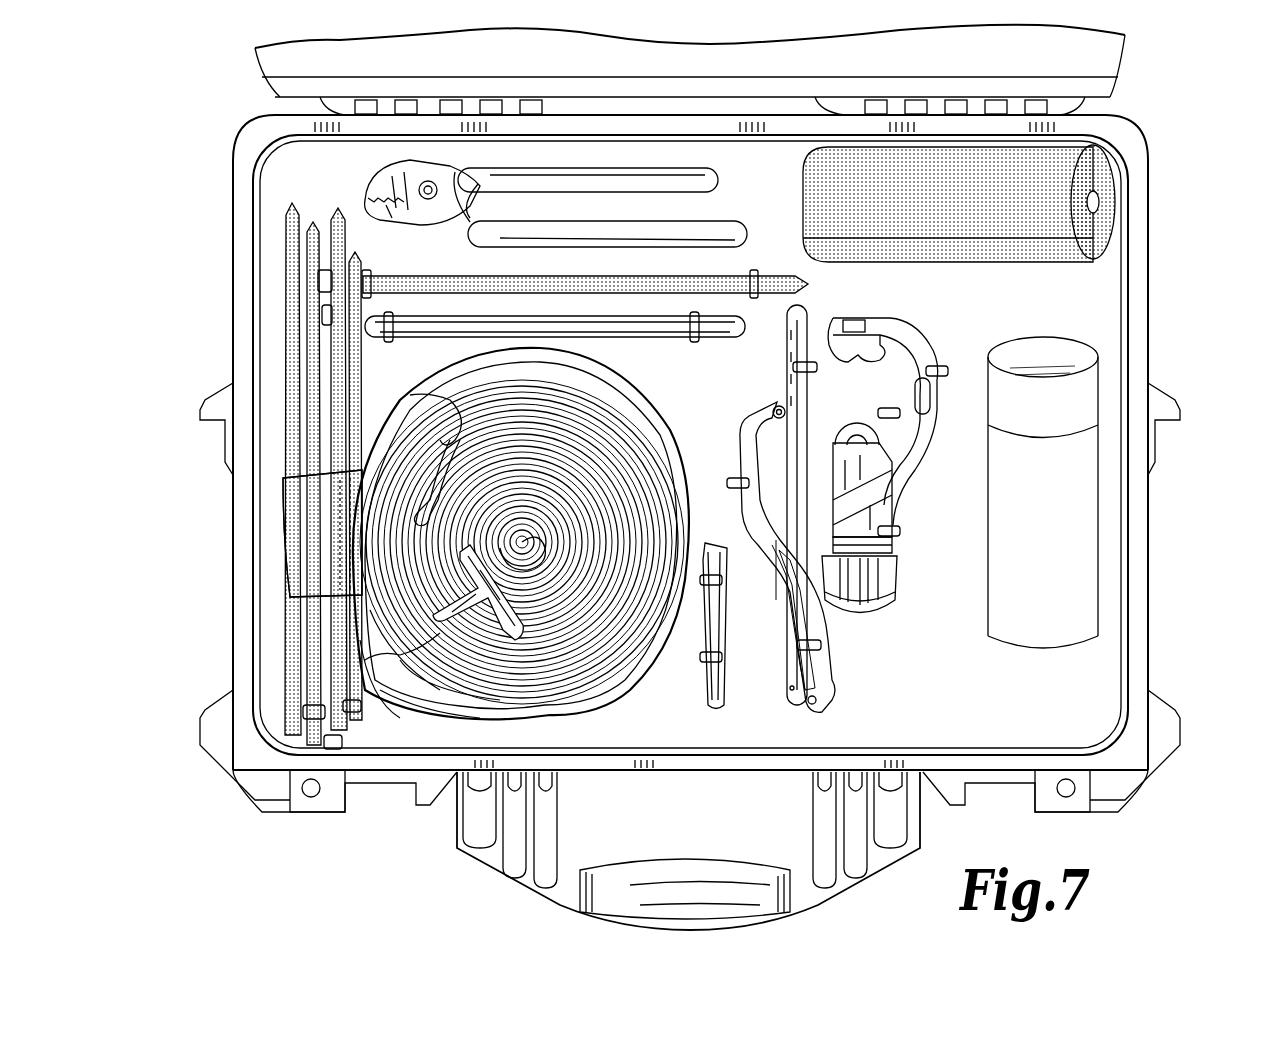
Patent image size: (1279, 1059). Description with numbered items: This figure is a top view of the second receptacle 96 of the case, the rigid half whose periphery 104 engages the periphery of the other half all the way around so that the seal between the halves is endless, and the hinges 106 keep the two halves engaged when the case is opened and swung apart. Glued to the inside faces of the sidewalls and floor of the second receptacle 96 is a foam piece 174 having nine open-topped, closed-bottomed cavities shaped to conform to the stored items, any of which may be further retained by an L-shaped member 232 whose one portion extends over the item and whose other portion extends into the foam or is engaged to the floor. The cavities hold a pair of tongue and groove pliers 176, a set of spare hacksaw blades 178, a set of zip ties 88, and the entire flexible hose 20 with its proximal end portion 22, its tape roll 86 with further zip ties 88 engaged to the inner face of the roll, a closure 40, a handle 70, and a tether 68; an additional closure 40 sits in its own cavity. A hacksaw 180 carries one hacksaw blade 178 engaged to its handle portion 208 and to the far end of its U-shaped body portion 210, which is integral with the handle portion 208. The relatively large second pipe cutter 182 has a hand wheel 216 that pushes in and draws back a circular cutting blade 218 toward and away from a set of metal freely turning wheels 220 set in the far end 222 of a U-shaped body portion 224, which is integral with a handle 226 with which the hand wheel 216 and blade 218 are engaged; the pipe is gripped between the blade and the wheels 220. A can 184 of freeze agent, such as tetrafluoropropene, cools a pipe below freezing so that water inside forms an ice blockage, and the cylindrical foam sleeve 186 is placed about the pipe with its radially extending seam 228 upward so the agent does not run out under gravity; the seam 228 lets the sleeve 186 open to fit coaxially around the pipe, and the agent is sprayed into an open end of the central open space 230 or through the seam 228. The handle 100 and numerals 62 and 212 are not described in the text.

The hinge 106 is at (848, 106).
The tongue and groove pliers 176 is at (362, 172).
The zip ties 88 is at (335, 215).
The hacksaw blade 178 is at (400, 312).
The tether 68 is at (430, 445).
The stake bundle 62 is at (352, 468).
The tape roll 86 is at (305, 490).
The proximal end portion 22 is at (712, 474).
The handle 70 is at (520, 640).
The closure 40 is at (565, 600).
The flexible hose 20 is at (552, 593).
The hacksaw 180 is at (793, 714).
The handle 100 is at (500, 872).
The handle portion 208 is at (867, 620).
The second pipe cutter 182 is at (818, 657).
The can of freeze agent 184 is at (1075, 628).
The periphery 104 is at (1148, 608).
The second receptacle 96 is at (1148, 540).
The hand wheel 216 is at (880, 600).
The handle 226 is at (892, 548).
The U-shaped body portion 224 is at (905, 467).
The circular cutting blade 218 is at (857, 425).
The U-shaped body portion 210 is at (755, 525).
The frame 212 is at (743, 433).
The freely turning wheels 220 is at (813, 362).
The far end 222 is at (923, 330).
The L-shaped member 232 is at (945, 372).
The foam piece 174 is at (1022, 177).
The seam 228 is at (1047, 243).
The foam sleeve 186 is at (1117, 222).
The open space 230 is at (1095, 193).